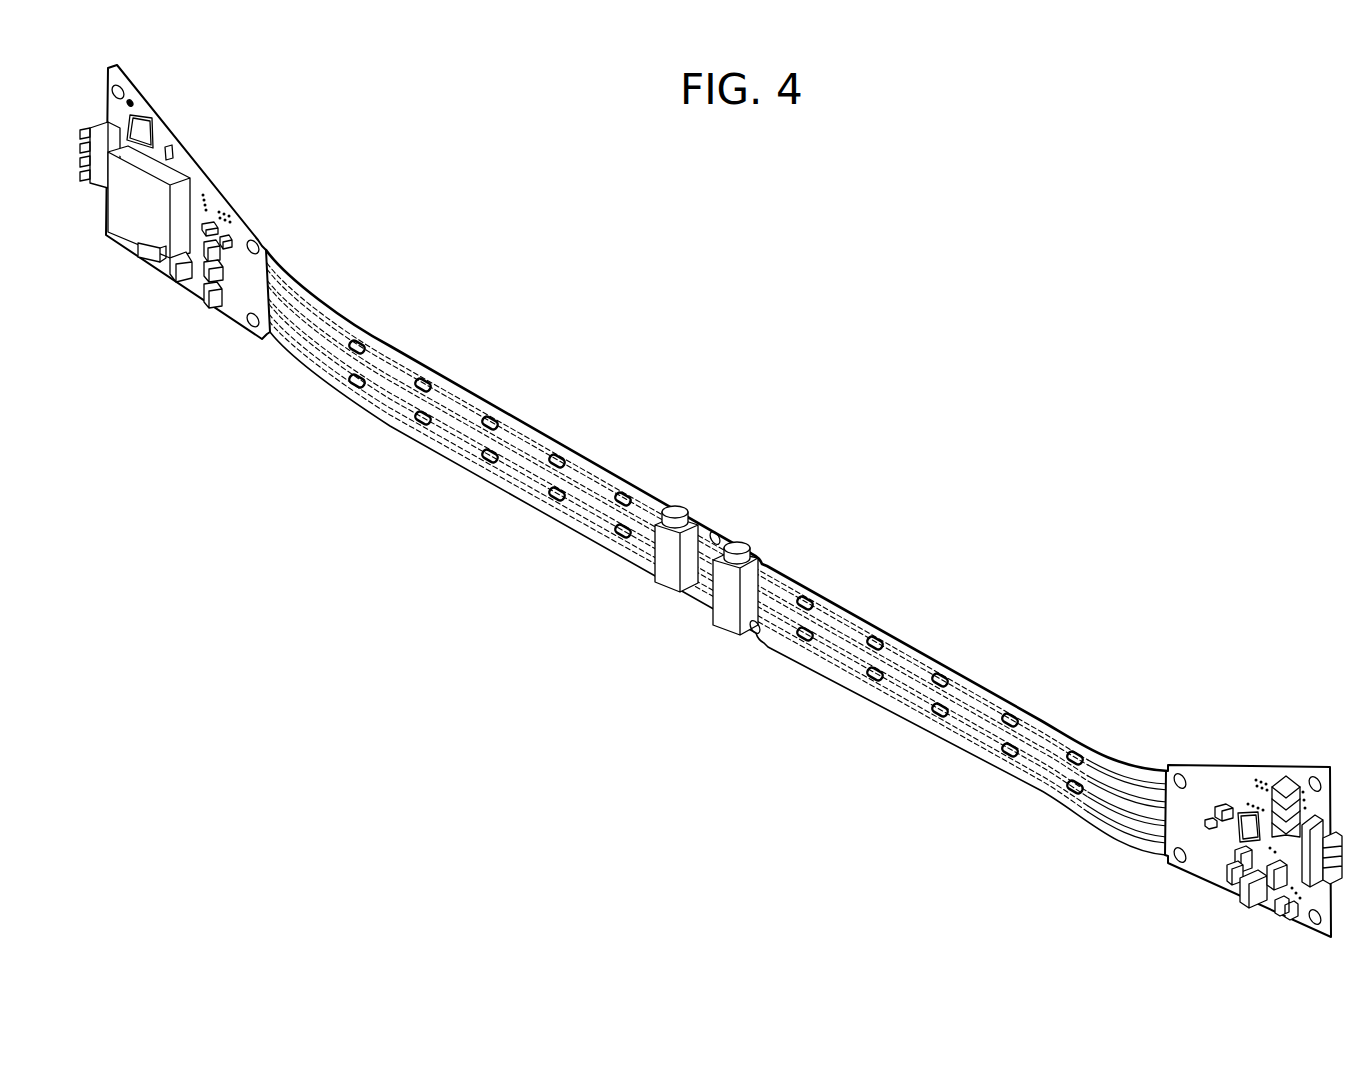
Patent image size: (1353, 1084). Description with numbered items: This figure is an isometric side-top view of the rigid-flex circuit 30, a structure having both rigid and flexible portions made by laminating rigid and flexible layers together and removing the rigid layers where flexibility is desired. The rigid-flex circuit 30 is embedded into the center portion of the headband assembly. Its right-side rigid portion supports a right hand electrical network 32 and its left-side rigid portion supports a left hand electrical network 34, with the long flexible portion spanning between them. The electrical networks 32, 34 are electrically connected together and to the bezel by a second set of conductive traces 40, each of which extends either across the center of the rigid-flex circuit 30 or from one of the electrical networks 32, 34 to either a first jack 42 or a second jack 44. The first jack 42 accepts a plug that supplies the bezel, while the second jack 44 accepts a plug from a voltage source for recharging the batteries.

The rigid-flex circuit 30 is at (540, 338).
The right hand electrical network 32 is at (236, 166).
The left hand electrical network 34 is at (1228, 732).
The second set of conductive traces 40 is at (952, 675).
The first jack 42 is at (737, 547).
The second jack 44 is at (673, 511).